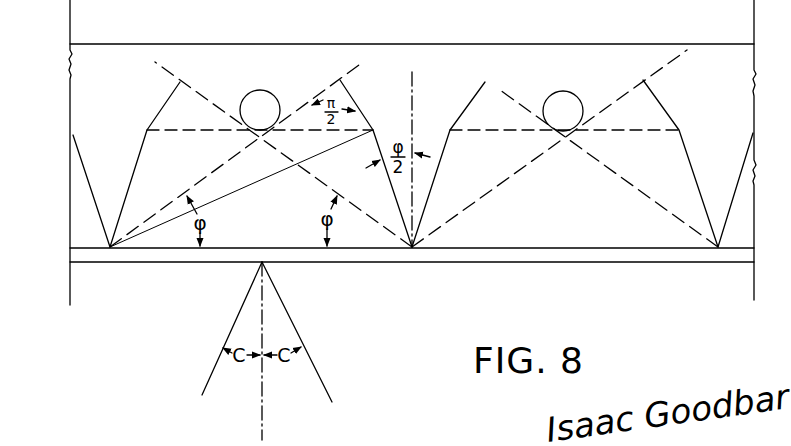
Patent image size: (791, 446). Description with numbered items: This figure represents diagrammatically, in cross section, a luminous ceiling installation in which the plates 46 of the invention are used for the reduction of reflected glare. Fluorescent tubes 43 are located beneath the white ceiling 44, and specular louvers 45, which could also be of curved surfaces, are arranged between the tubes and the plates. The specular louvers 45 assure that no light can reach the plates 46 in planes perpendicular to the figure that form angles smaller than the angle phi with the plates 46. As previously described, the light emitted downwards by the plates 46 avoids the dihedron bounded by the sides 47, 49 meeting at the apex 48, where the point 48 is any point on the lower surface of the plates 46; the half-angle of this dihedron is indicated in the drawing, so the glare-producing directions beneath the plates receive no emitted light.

The fluorescent tubes 43 is at (278, 92).
The white ceiling 44 is at (532, 44).
The specular louvers 45 is at (140, 151).
The plates 46 is at (615, 262).
The dihedron side 47 is at (224, 347).
The point on lower surface of plates 48 is at (259, 266).
The dihedron side 49 is at (307, 349).